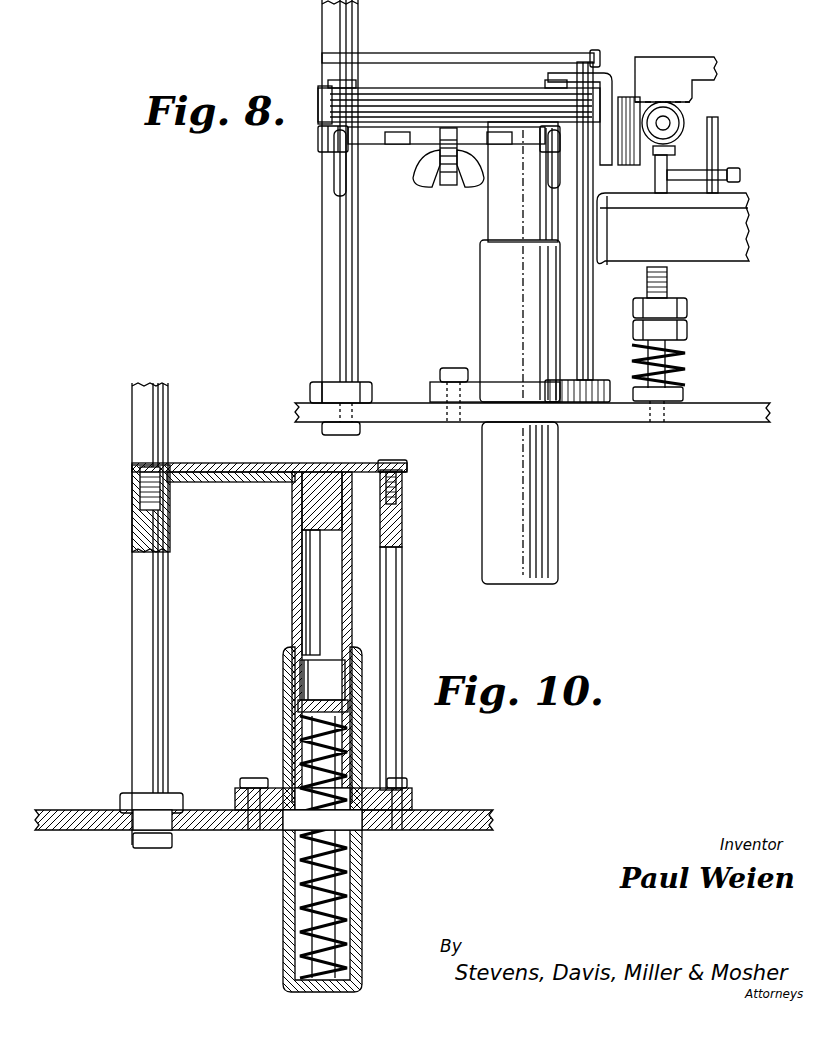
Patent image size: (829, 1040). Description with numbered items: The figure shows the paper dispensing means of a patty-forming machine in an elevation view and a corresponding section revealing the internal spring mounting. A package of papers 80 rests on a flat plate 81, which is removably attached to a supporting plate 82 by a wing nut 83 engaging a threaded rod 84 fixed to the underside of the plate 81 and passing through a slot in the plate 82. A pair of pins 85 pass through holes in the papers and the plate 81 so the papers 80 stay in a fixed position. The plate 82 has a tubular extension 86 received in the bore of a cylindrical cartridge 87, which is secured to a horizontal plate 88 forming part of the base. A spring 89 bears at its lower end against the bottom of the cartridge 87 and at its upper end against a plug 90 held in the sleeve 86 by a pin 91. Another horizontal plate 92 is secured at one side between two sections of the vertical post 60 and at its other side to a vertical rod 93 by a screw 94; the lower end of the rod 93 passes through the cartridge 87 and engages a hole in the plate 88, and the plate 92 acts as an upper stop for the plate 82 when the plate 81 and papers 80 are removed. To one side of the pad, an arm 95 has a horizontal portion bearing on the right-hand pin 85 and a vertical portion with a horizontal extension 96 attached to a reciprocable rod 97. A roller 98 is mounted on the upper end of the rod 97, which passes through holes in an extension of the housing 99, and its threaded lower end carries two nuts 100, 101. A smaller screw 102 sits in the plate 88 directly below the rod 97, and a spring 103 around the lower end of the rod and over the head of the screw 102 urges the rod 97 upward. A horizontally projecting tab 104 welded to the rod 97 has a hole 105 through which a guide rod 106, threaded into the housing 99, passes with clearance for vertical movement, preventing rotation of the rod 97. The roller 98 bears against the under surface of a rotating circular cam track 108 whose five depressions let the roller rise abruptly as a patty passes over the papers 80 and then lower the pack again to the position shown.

In FIG. 8, the vertical post 60 is at (330, 20).
In FIG. 10, the vertical post 60 is at (134, 412).
In FIG. 8, the package of papers 80 is at (430, 94).
In FIG. 8, the flat plate 81 is at (318, 126).
In FIG. 8, the supporting plate 82 is at (372, 145).
In FIG. 10, the supporting plate 82 is at (238, 482).
In FIG. 8, the wing nut 83 is at (427, 187).
In FIG. 8, the threaded rod 84 is at (446, 164).
In FIG. 8, the pins 85 is at (330, 86).
In FIG. 8, the tubular extension 86 is at (488, 218).
In FIG. 10, the tubular extension 86 is at (292, 590).
In FIG. 8, the cylindrical cartridge 87 is at (558, 516).
In FIG. 10, the cylindrical cartridge 87 is at (362, 880).
In FIG. 8, the horizontal plate 88 is at (636, 422).
In FIG. 10, the horizontal plate 88 is at (226, 830).
In FIG. 10, the spring 89 is at (298, 890).
In FIG. 10, the plug 90 is at (316, 690).
In FIG. 10, the pin 91 is at (300, 710).
In FIG. 8, the horizontal plate 92 is at (458, 53).
In FIG. 10, the horizontal plate 92 is at (210, 463).
In FIG. 8, the vertical rod 93 is at (588, 306).
In FIG. 10, the vertical rod 93 is at (402, 578).
In FIG. 10, the screw 94 is at (392, 462).
In FIG. 8, the arm 95 is at (606, 73).
In FIG. 8, the horizontal extension 96 is at (632, 165).
In FIG. 8, the reciprocable rod 97 is at (675, 152).
In FIG. 8, the roller 98 is at (684, 118).
In FIG. 8, the housing 99 is at (720, 267).
In FIG. 8, the nut 100 is at (688, 310).
In FIG. 8, the nut 101 is at (688, 331).
In FIG. 8, the screw 102 is at (686, 393).
In FIG. 8, the spring 103 is at (688, 364).
In FIG. 8, the tab 104 is at (740, 176).
In FIG. 8, the hole 105 is at (733, 170).
In FIG. 8, the guide rod 106 is at (718, 138).
In FIG. 8, the circular cam track 108 is at (680, 60).